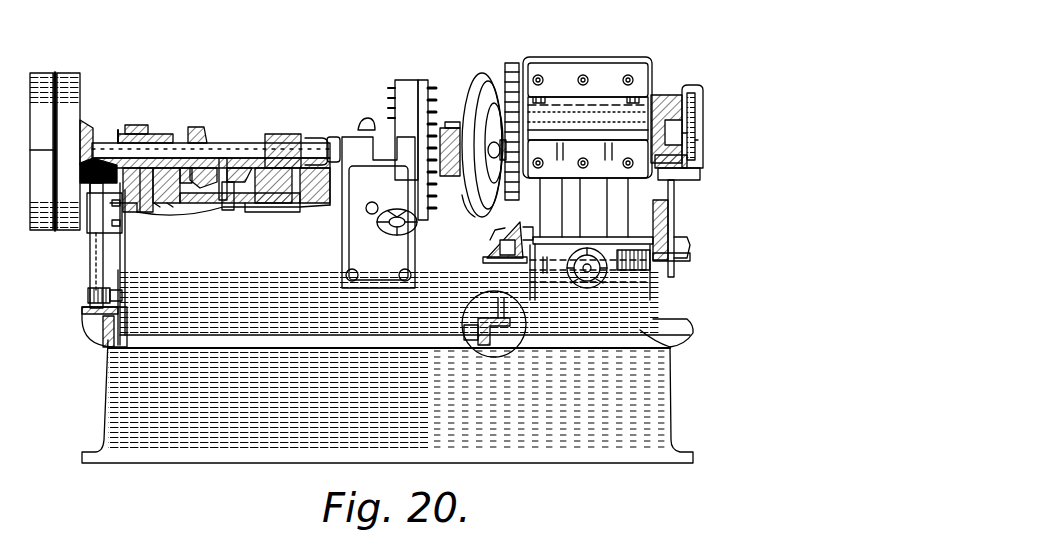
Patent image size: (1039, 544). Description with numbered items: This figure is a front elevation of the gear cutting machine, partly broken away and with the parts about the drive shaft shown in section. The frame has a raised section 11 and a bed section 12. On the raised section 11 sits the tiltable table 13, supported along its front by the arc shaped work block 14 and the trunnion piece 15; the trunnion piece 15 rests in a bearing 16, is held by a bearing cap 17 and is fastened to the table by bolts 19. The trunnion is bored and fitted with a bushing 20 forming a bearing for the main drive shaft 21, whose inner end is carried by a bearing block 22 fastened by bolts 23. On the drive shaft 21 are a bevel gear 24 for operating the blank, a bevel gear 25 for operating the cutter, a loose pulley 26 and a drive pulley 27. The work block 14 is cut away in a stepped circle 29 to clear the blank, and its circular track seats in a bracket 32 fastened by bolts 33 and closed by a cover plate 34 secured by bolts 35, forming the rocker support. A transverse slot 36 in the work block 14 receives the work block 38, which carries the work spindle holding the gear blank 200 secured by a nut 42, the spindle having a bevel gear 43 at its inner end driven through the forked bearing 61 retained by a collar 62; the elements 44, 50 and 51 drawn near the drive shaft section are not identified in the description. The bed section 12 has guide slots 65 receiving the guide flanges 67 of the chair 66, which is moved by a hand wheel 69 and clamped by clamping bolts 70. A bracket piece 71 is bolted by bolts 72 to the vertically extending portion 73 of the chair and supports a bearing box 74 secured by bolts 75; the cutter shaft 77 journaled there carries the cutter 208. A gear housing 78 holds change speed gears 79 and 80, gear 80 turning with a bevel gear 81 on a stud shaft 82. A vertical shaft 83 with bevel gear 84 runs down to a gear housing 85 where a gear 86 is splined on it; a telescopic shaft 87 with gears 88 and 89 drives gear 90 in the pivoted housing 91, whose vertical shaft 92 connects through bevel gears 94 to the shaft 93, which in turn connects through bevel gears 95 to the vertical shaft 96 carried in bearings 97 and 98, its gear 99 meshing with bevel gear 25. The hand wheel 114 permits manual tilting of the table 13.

The raised section 11 is at (133, 260).
The bed section 12 is at (640, 292).
The table 13 is at (193, 205).
The arc shaped work block 14 is at (449, 128).
The trunnion piece 15 is at (160, 134).
The bearing 16 is at (135, 213).
The bearing cap 17 is at (135, 125).
The bolts 19 is at (170, 206).
The bushing 20 is at (120, 133).
The main drive shaft 21 is at (102, 147).
The bearing block 22 is at (282, 140).
The bolts 23 is at (275, 208).
The bevel gear 24 is at (192, 128).
The bevel gear 25 is at (88, 127).
The loose pulley 26 is at (40, 73).
The drive pulley 27 is at (70, 73).
The stepped circle 29 is at (455, 122).
The bracket 32 is at (405, 80).
The bolts 33 is at (368, 206).
The cover plate 34 is at (423, 80).
The bolts 35 is at (320, 205).
The transverse slot 36 is at (467, 200).
The work block 38 is at (447, 160).
The nut 42 is at (505, 162).
The bevel gear 43 is at (363, 125).
The lever 44 is at (230, 163).
The cam 50 is at (213, 166).
The bolt 51 is at (242, 188).
The forked bearing 61 is at (335, 137).
The collar 62 is at (315, 143).
The guide slots 65 is at (650, 315).
The chair 66 is at (640, 190).
The guide flanges 67 is at (653, 277).
The hand wheel 69 is at (573, 280).
The clamping bolts 70 is at (530, 227).
The bracket piece 71 is at (652, 60).
The bolts 72 is at (587, 75).
The vertically extending portion 73 is at (542, 60).
The bearing box 74 is at (622, 110).
The bolts 75 is at (557, 66).
The cutter shaft 77 is at (673, 107).
The gear housing 78 is at (703, 93).
The change speed gear 79 is at (703, 120).
The change speed gear 80 is at (703, 133).
The bevel gear 81 is at (690, 162).
The stud shaft 82 is at (697, 145).
The vertical shaft 83 is at (675, 205).
The bevel gear 84 is at (697, 180).
The gear housing 85 is at (688, 245).
The gear 86 is at (683, 257).
The telescopic shaft 87 is at (667, 347).
The gear 88 is at (677, 235).
The gear 89 is at (500, 248).
The gear 90 is at (483, 259).
The housing 91 is at (490, 240).
The vertical shaft 92 is at (497, 307).
The shaft 93 is at (480, 338).
The bevel gears 94 is at (492, 330).
The bevel gears 95 is at (103, 332).
The vertical shaft 96 is at (97, 255).
The bearing 97 is at (92, 222).
The bearing 98 is at (88, 293).
The gear 99 is at (87, 193).
The hand wheel 114 is at (397, 233).
The gear blank 200 is at (484, 73).
The cutter 208 is at (513, 63).